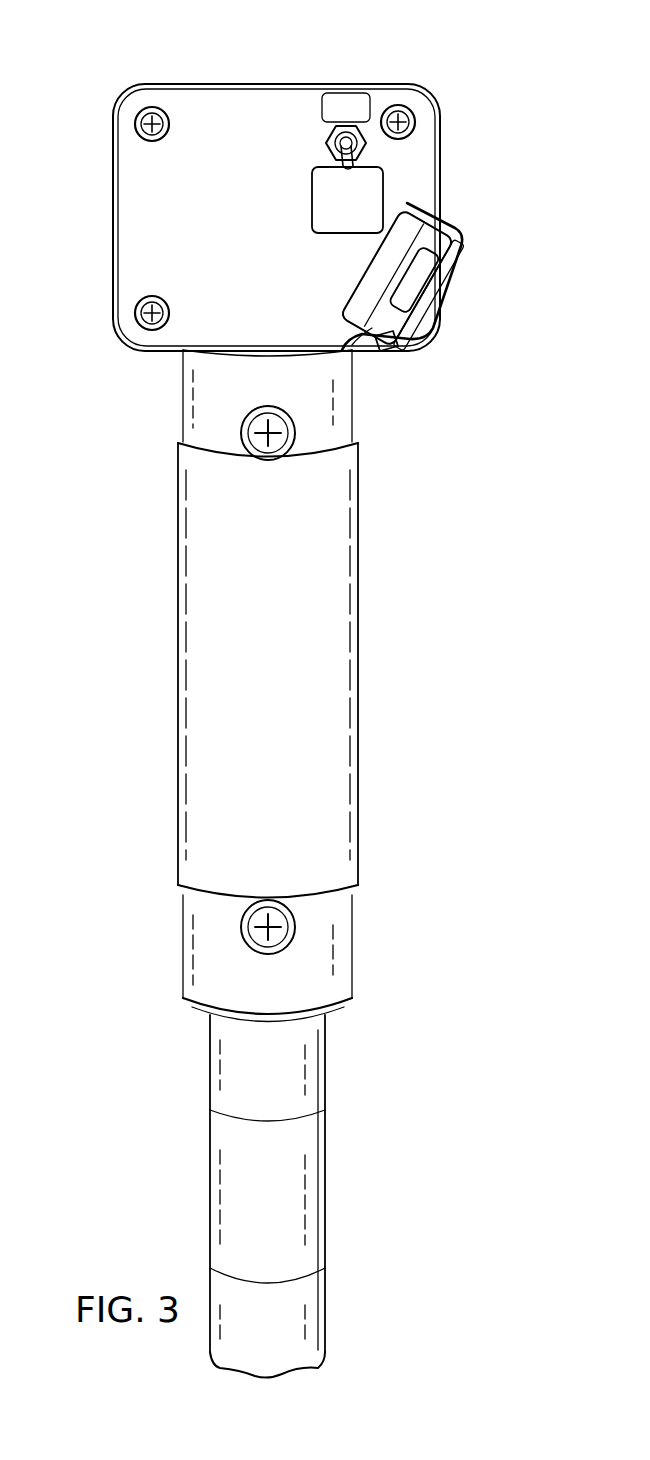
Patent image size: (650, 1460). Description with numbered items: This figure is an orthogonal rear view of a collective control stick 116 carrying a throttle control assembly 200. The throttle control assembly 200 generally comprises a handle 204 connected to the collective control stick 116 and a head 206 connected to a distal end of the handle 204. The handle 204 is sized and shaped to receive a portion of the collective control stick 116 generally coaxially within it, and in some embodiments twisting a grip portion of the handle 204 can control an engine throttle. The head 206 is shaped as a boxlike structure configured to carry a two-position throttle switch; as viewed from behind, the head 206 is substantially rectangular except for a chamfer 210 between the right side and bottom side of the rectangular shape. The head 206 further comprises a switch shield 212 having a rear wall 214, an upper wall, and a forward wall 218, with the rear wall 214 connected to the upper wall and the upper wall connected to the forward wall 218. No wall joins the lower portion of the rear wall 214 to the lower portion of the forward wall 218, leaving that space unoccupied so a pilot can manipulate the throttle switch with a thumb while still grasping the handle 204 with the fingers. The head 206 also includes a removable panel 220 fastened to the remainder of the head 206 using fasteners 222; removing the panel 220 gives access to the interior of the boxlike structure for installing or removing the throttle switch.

The throttle control assembly 200 is at (414, 58).
The handle 204 is at (178, 662).
The head 206 is at (113, 215).
The chamfer 210 is at (448, 226).
The switch shield 212 is at (436, 339).
The rear wall 214 is at (383, 347).
The forward wall 218 is at (452, 276).
The removable panel 220 is at (235, 112).
The fasteners 222 is at (162, 107).
The collective control stick 116 is at (210, 1188).